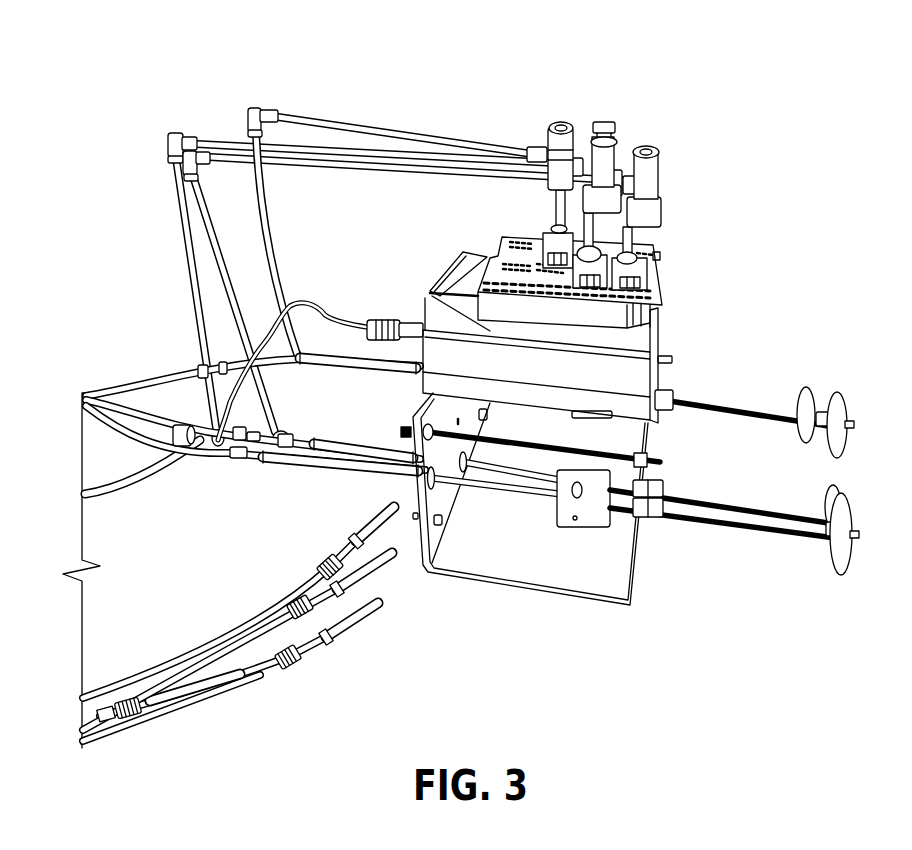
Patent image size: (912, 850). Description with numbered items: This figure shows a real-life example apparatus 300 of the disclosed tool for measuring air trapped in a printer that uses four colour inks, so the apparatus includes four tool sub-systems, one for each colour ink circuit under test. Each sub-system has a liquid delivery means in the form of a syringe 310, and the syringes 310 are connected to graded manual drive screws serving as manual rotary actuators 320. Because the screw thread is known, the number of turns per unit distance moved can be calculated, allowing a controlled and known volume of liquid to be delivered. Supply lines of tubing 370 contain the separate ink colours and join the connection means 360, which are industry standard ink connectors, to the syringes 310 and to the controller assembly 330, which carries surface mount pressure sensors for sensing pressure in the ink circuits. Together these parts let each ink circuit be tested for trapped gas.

The example gas volume measurement apparatus 300 is at (722, 44).
The syringes 310 is at (307, 473).
The manual rotary actuators 320 is at (781, 533).
The controller assembly having surface mount pressure sensors 330 is at (647, 270).
The connection means 360 is at (263, 606).
The tubing 370 is at (202, 346).